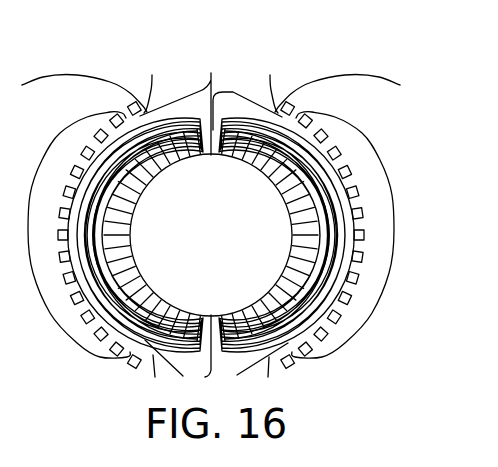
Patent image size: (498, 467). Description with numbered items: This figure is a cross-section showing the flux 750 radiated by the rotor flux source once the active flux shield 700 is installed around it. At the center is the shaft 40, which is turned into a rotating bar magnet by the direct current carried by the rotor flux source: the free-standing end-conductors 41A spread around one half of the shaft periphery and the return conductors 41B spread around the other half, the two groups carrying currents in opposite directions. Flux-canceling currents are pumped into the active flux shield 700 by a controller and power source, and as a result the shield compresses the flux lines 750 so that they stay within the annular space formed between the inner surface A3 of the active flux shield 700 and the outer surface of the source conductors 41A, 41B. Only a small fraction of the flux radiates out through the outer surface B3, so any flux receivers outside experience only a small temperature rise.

The active flux shield 700 is at (62, 163).
The flux 750 is at (192, 105).
The shaft 40 is at (297, 232).
The free-standing end-conductors 41A is at (175, 310).
The return conductors 41B is at (243, 312).
The inner surface of the active flux shield A3 is at (310, 152).
The outer surface of the active flux shield B3 is at (357, 279).